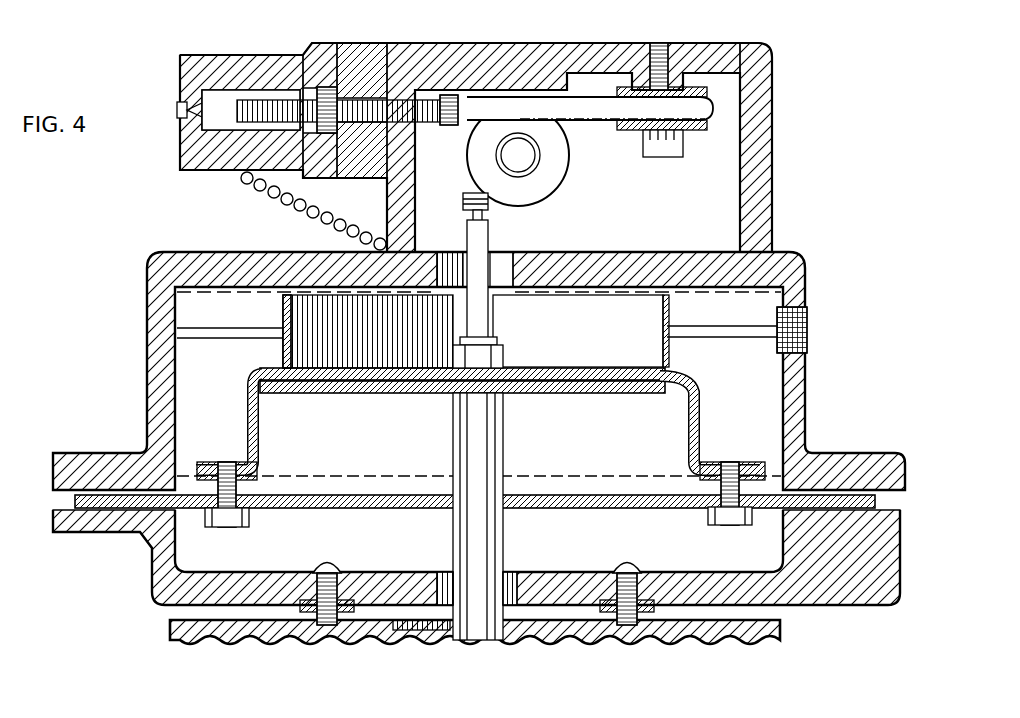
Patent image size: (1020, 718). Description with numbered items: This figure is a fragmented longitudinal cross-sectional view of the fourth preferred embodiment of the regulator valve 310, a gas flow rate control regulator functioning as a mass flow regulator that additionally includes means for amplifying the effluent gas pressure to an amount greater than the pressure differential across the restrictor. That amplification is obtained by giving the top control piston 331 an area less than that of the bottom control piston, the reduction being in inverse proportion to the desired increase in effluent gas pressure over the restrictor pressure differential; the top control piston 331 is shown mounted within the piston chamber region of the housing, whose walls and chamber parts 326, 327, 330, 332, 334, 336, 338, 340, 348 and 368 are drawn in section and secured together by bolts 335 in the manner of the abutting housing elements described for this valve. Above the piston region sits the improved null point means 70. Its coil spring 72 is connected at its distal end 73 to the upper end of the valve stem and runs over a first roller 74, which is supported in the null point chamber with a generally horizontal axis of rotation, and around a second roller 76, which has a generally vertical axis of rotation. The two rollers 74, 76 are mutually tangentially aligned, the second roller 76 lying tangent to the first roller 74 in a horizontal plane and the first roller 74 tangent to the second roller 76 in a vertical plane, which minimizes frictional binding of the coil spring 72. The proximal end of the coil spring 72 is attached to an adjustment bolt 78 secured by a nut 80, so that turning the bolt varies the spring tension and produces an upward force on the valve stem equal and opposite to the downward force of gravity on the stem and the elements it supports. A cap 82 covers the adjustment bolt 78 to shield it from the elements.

The null point means 70 is at (790, 48).
The coil spring 72 is at (597, 108).
The distal end 73 is at (487, 200).
The first roller 74 is at (565, 162).
The second roller 76 is at (715, 126).
The bolt 78 is at (433, 127).
The nut 80 is at (333, 140).
The cap 82 is at (200, 70).
The regulator valve 310 is at (846, 176).
The motor chamber 326 is at (373, 469).
The shaft bushing 327 is at (445, 572).
The left mounting bracket 330 is at (275, 408).
The top control piston 331 is at (345, 394).
The right mounting bracket 332 is at (695, 443).
The lower housing 334 is at (850, 583).
The bolts 335 is at (220, 463).
The upper housing 336 is at (150, 303).
The actuator chamber 338 is at (676, 230).
The actuator housing 340 is at (760, 122).
The drive shaft 348 is at (495, 558).
The vent screen 368 is at (800, 342).